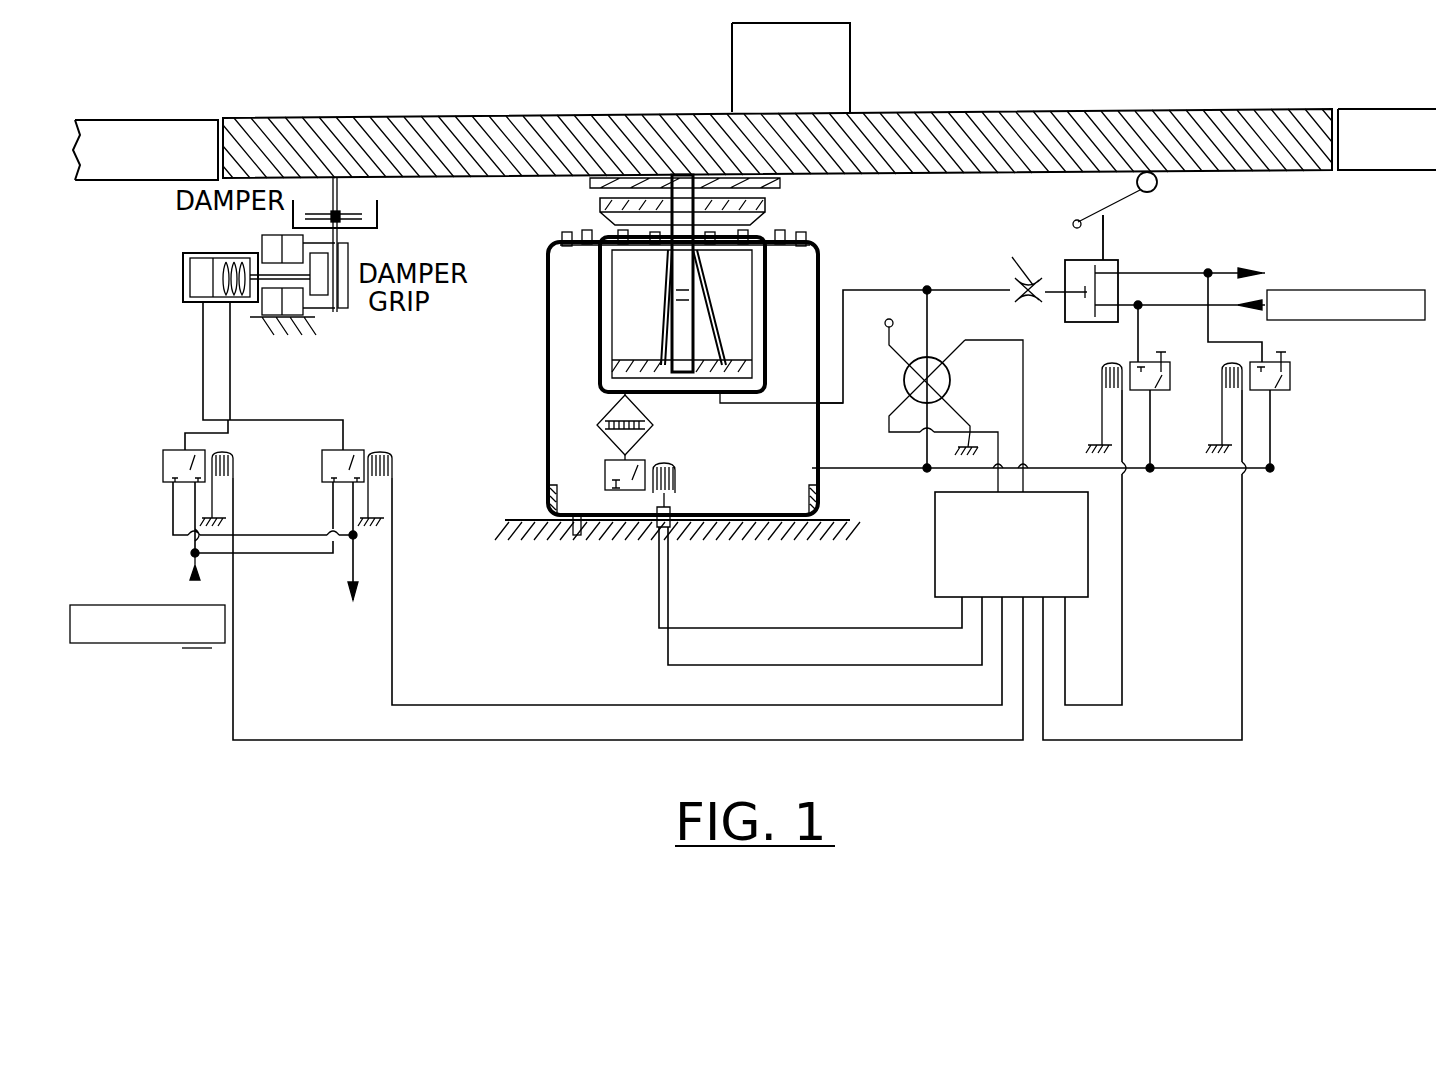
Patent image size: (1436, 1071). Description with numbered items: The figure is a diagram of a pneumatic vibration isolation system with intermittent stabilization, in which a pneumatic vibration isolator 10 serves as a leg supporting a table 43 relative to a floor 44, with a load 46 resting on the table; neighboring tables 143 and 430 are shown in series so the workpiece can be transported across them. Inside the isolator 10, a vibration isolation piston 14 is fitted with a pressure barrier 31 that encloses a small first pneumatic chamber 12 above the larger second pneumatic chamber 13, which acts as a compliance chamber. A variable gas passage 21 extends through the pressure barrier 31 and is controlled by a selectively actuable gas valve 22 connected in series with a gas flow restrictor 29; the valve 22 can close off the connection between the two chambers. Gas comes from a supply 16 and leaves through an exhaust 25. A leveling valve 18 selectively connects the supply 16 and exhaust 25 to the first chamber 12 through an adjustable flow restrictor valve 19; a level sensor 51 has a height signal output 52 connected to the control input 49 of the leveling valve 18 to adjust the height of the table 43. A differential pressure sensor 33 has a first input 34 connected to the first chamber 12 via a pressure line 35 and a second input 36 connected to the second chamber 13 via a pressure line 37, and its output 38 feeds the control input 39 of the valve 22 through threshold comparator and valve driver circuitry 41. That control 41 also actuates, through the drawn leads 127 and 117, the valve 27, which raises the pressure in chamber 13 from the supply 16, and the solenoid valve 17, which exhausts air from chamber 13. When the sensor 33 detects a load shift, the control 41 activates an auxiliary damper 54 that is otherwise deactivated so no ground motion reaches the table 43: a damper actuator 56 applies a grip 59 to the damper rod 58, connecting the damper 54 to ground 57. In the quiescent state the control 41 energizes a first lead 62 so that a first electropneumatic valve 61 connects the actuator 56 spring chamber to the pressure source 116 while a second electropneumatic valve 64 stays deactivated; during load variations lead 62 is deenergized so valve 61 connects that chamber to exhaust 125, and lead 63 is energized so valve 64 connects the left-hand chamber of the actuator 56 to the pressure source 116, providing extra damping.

The pneumatic vibration isolator 10 is at (548, 385).
The first pneumatic chamber 12 is at (605, 368).
The second pneumatic chamber 13 is at (790, 472).
The vibration isolation piston 14 is at (603, 290).
The gas supply 16 is at (1340, 321).
The solenoid valve 17 is at (1275, 392).
The leveling valve 18 is at (1083, 260).
The adjustable flow restrictor valve 19 is at (1010, 269).
The variable gas passage 21 is at (628, 398).
The gas valve 22 is at (610, 462).
The gas exhaust 25 is at (1350, 262).
The valve 27 is at (1143, 366).
The gas flow restrictor 29 is at (605, 420).
The pressure barrier 31 is at (690, 395).
The differential pressure sensor 33 is at (905, 435).
The first input 34 is at (930, 320).
The pressure line 35 is at (855, 290).
The second input 36 is at (925, 440).
The pressure line 37 is at (830, 470).
The output 38 is at (1010, 456).
The control input 39 is at (668, 540).
The control 41 is at (935, 585).
The table 43 is at (962, 174).
The floor 44 is at (528, 520).
The load 46 is at (805, 88).
The control input 49 is at (1103, 248).
The level sensor 51 is at (1090, 220).
The height signal output 52 is at (1108, 222).
The auxiliary damper 54 is at (377, 200).
The damper actuator 56 is at (220, 253).
The ground 57 is at (303, 337).
The damper rod 58 is at (340, 305).
The grip 59 is at (330, 272).
The first electropneumatic valve 61 is at (163, 460).
The first lead 62 is at (236, 697).
The lead 63 is at (393, 575).
The second electropneumatic valve 64 is at (322, 462).
The pressure source 116 is at (157, 645).
The control line 117 is at (1246, 612).
The exhaust 125 is at (352, 558).
The control line 127 is at (1125, 612).
The table 143 is at (150, 165).
The table 430 is at (1405, 155).